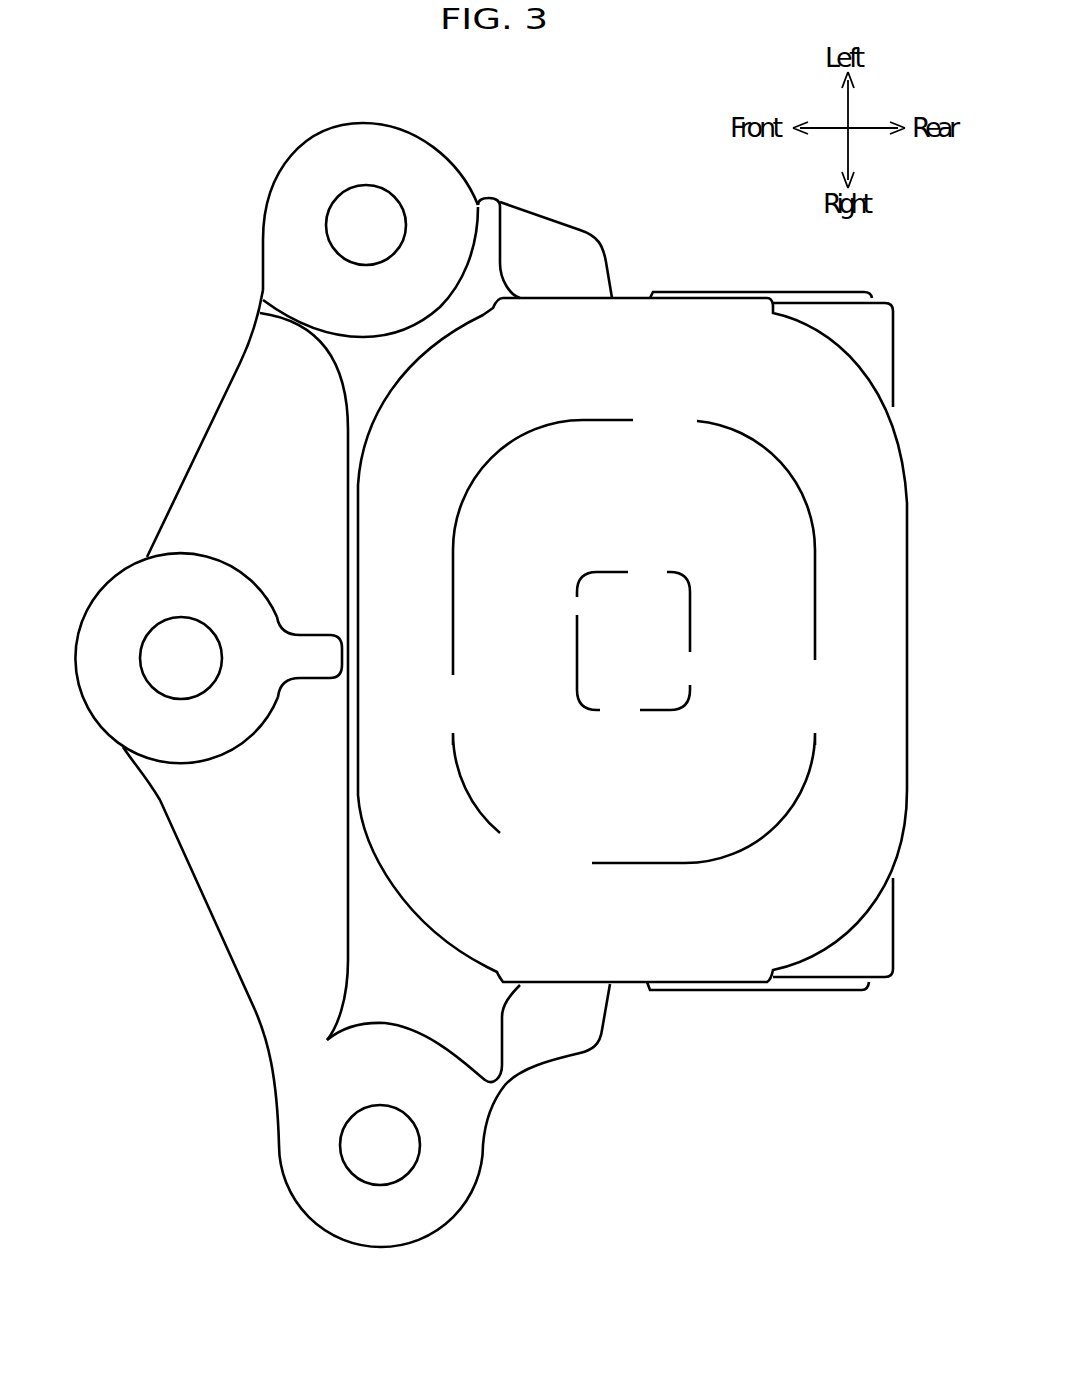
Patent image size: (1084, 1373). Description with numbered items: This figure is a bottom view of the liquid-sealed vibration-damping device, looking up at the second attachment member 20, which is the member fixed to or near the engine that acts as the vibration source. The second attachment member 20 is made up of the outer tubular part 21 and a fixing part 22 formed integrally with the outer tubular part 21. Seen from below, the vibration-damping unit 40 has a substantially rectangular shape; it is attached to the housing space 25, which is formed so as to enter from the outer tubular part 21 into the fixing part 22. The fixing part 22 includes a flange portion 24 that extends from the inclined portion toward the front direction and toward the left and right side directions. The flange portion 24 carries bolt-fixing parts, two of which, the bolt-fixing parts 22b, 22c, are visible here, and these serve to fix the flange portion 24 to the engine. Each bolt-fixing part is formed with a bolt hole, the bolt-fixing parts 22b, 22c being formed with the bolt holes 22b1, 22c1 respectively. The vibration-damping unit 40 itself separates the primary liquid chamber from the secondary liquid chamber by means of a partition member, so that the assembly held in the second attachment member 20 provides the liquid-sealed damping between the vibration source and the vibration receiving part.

The second attachment member 20 is at (866, 1000).
The outer tubular part 21 is at (674, 993).
The fixing part 22 is at (327, 693).
The bolt-fixing part 22b is at (263, 932).
The bolt hole 22b1 is at (173, 693).
The bolt-fixing part 22c is at (391, 206).
The bolt hole 22c1 is at (368, 195).
The flange portion 24 is at (233, 480).
The housing space 25 is at (368, 430).
The vibration-damping unit 40 is at (848, 558).